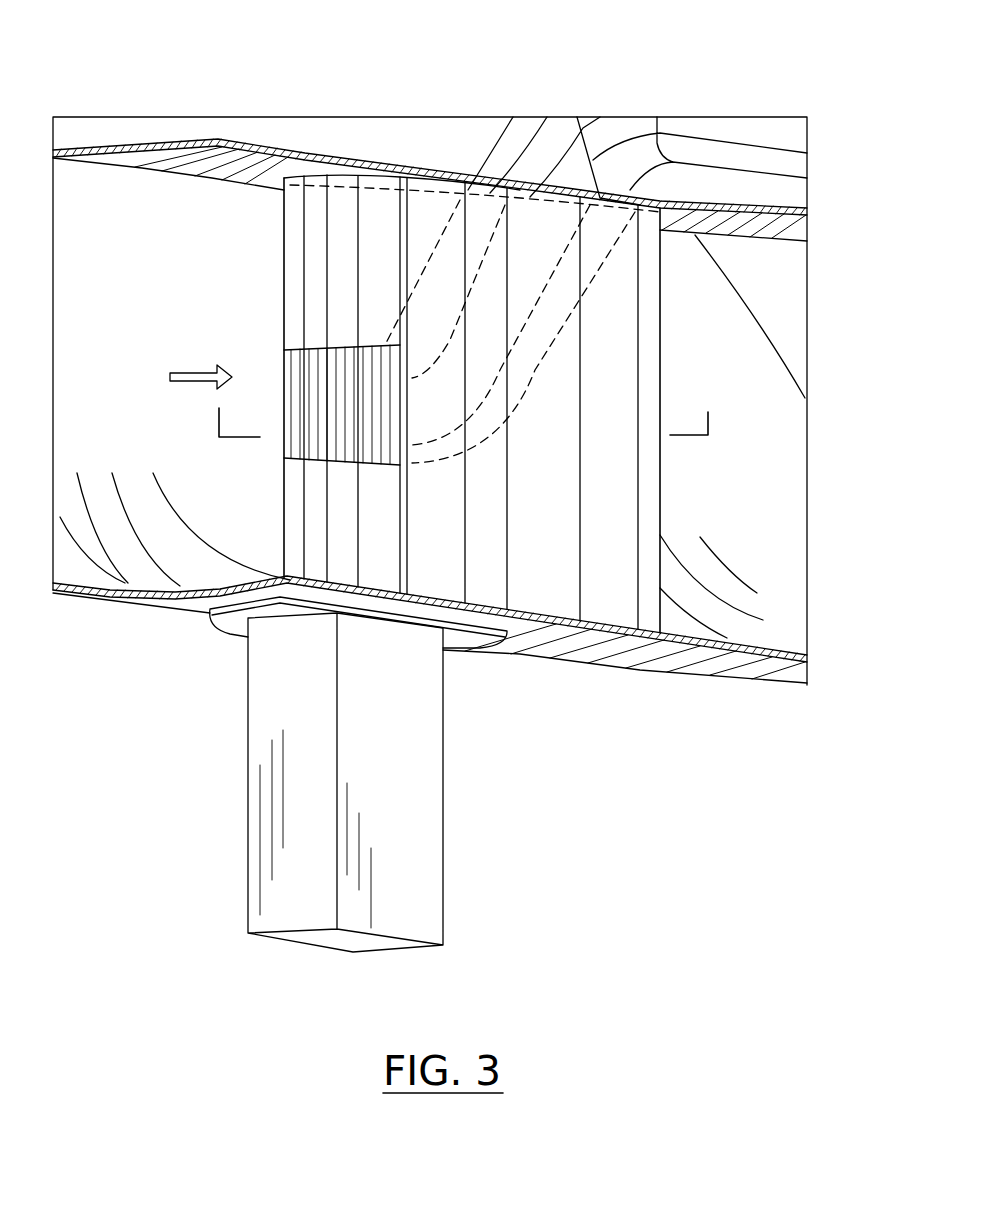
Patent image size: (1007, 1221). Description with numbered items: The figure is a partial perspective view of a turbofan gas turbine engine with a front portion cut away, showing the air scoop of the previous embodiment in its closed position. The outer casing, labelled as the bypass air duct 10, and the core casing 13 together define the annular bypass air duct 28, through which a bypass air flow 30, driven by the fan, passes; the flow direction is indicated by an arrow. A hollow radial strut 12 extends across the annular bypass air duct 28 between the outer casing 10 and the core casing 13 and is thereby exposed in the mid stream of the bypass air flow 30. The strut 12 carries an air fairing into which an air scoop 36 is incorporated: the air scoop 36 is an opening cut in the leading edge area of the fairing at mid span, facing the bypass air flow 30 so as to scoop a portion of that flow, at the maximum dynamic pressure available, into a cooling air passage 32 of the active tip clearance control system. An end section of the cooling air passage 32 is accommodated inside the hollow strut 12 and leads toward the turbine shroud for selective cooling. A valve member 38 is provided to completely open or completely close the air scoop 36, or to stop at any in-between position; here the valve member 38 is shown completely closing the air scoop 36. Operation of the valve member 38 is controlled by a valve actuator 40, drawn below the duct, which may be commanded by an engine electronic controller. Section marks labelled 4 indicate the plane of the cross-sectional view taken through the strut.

The bypass air duct 10 is at (680, 665).
The strut 12 is at (462, 197).
The core casing 13 is at (780, 232).
The annular bypass air duct 28 is at (105, 543).
The bypass air flow 30 is at (193, 373).
The cooling air passage 32 is at (762, 165).
The air scoop 36 is at (376, 345).
The valve member 38 is at (303, 387).
The valve actuator 40 is at (412, 870).
The section line 4 is at (463, 426).